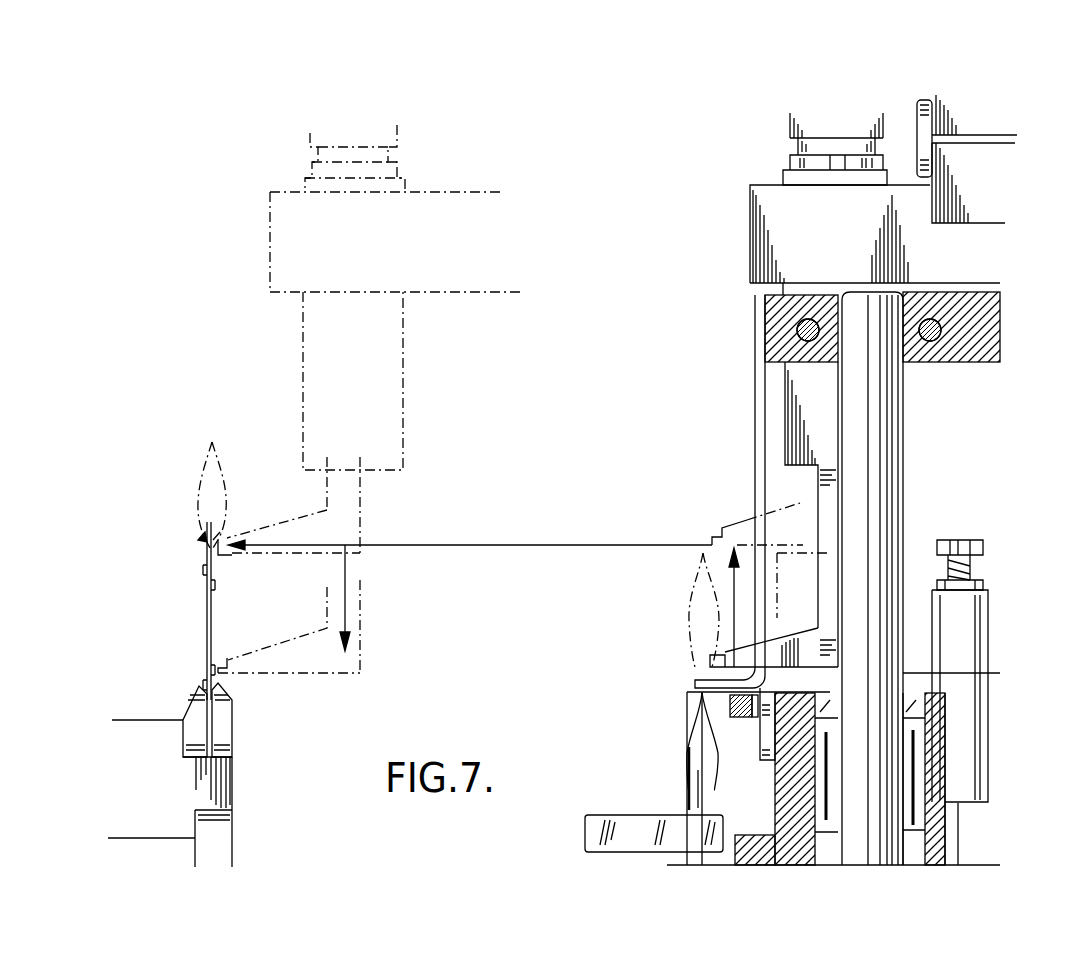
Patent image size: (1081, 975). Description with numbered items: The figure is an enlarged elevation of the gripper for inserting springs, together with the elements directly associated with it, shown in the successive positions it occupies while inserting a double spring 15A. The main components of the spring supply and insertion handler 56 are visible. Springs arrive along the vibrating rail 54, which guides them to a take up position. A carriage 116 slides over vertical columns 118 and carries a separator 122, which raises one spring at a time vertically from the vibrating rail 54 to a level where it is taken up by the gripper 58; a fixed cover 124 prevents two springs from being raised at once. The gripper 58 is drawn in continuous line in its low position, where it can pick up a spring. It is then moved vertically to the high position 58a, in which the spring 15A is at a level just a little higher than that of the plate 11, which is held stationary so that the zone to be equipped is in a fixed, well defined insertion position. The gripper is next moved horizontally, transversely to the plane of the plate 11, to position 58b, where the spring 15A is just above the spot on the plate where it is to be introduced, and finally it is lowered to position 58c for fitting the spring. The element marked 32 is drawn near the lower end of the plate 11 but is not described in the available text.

The plate 11 is at (205, 595).
The double spring 15A is at (220, 460).
The needle holder 32 is at (152, 730).
The vibrating rail 54 is at (638, 828).
The handler 56 is at (941, 517).
The gripper 58 is at (712, 657).
The high position of gripper 58a is at (738, 522).
The horizontally displaced position of gripper 58b is at (272, 522).
The lowered position of gripper 58c is at (278, 640).
The carriage 116 is at (933, 825).
The vertical columns 118 is at (883, 757).
The separator 122 is at (700, 752).
The fixed cover 124 is at (757, 440).